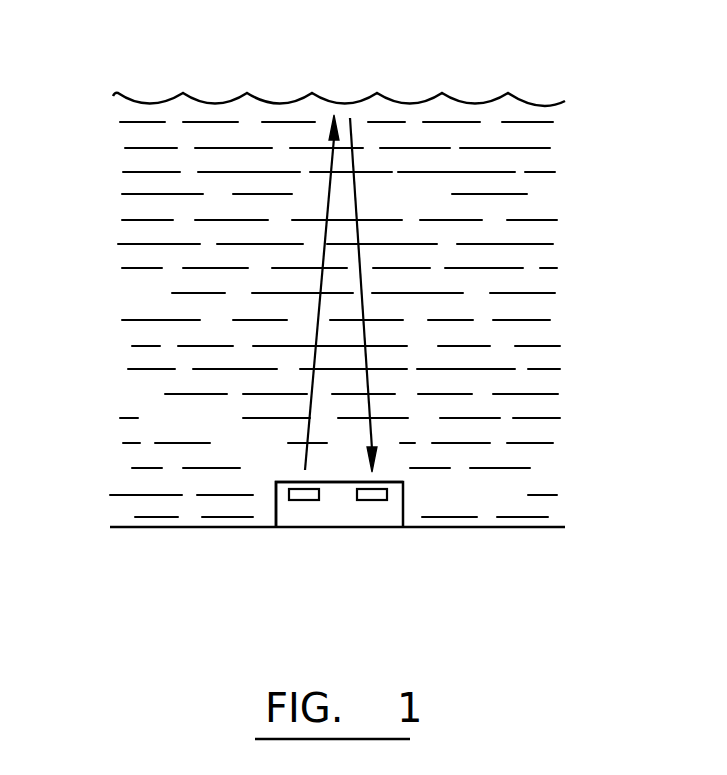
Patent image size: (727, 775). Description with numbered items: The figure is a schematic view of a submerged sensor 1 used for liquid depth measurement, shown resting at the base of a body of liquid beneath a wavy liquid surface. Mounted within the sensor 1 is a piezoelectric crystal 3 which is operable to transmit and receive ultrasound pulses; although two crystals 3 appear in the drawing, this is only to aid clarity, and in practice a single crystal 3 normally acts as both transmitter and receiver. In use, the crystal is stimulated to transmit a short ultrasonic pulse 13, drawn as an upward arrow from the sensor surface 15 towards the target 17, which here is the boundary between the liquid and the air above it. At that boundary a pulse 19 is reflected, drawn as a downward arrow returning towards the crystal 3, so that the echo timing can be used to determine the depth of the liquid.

The sensor 1 is at (403, 498).
The piezoelectric crystal 3 is at (299, 497).
The ultrasonic pulse 13 is at (318, 300).
The sensor surface 15 is at (286, 482).
The target 17 is at (341, 103).
The reflected pulse 19 is at (362, 188).